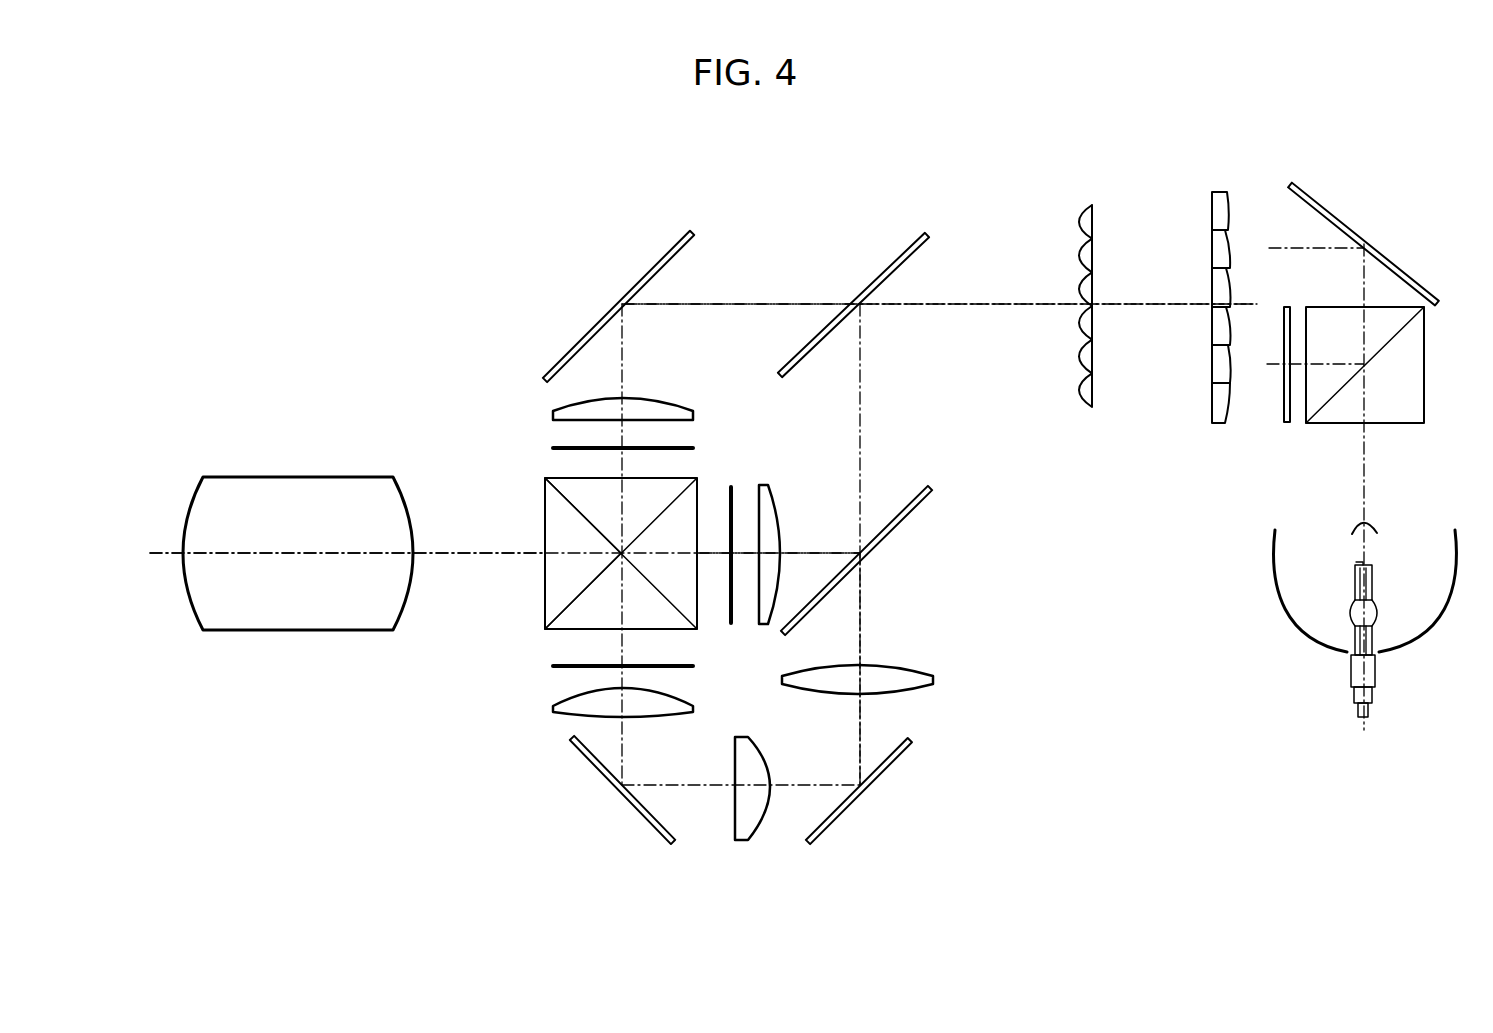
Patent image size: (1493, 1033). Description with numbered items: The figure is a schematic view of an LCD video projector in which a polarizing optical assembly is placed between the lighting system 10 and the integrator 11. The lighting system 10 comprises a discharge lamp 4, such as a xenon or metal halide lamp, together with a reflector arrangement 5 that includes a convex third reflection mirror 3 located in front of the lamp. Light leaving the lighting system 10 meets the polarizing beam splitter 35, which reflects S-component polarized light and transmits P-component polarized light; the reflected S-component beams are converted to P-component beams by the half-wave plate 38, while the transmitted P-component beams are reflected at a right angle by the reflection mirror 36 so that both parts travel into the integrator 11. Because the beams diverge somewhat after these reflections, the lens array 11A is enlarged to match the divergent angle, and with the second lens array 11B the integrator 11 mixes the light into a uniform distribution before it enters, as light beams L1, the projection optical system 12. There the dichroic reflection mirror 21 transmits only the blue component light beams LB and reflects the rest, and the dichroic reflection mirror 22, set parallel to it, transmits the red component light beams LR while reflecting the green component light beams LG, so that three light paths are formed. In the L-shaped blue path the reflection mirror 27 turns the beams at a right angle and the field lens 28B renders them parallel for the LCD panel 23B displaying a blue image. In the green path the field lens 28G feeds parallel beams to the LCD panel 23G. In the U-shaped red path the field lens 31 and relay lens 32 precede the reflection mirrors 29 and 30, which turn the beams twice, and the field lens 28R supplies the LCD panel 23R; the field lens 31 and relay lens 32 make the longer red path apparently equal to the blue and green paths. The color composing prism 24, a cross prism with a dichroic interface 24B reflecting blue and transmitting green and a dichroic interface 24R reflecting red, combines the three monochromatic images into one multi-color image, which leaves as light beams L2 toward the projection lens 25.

The convex third reflection mirror 3 is at (1356, 516).
The discharge lamp 4 is at (1376, 681).
The reflector arrangement 5 is at (1270, 580).
The lighting system 10 is at (1338, 597).
The integrator 11 is at (1170, 271).
The lens array 11A is at (1222, 192).
The lens array 11B is at (1092, 205).
The projection optical system 12 is at (817, 250).
The dichroic reflection mirror 21 is at (921, 250).
The dichroic reflection mirror 22 is at (920, 513).
The liquid crystal display panel 23B is at (697, 448).
The liquid crystal display panel 23G is at (734, 612).
The liquid crystal display panel 23R is at (553, 668).
The color composing prism 24 is at (545, 566).
The dichroic interface 24R is at (548, 492).
The dichroic interface 24B is at (548, 619).
The projection lens 25 is at (410, 507).
The reflection mirror 27 is at (676, 248).
The field lens 28B is at (698, 410).
The field lens 28G is at (771, 490).
The field lens 28R is at (553, 712).
The reflection mirror 29 is at (838, 832).
The reflection mirror 30 is at (632, 812).
The field lens 31 is at (935, 680).
The relay lens 32 is at (763, 828).
The polarizing beam splitter 35 is at (1424, 422).
The reflection mirror 36 is at (1352, 236).
The half-wave plate 38 is at (1287, 422).
The light beam L1 is at (1000, 310).
The light beam L2 is at (487, 553).
The blue component light beams LB is at (765, 300).
The green component light beams LG is at (810, 553).
The red component light beams LR is at (866, 635).